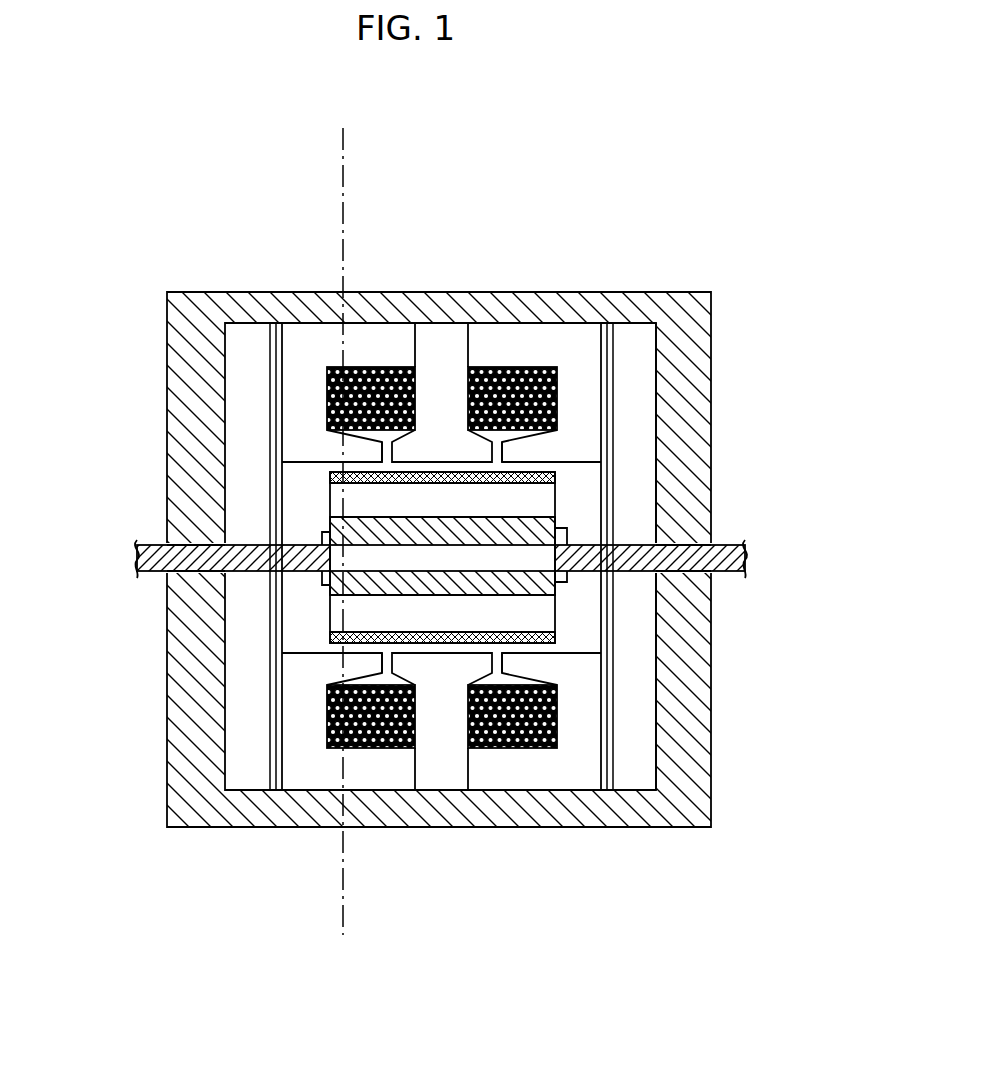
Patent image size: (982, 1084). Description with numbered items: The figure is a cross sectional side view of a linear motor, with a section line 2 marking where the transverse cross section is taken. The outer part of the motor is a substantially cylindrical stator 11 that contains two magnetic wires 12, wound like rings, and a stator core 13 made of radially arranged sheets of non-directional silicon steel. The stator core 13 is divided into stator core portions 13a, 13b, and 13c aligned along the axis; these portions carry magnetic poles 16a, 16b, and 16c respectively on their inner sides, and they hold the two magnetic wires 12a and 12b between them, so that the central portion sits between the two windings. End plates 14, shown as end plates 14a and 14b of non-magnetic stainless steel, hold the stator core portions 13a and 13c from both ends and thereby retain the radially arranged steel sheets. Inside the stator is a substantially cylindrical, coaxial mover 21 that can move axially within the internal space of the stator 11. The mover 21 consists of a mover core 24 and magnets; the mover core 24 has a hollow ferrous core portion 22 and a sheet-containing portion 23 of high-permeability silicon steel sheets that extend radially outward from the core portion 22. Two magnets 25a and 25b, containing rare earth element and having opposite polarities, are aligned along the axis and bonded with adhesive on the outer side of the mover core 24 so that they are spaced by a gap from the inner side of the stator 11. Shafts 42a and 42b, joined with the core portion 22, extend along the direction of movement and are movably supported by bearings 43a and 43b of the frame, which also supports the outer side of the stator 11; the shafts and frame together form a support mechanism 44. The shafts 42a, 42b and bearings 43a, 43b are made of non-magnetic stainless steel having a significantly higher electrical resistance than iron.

The line 2— 2 is at (398, 140).
The stator 11 is at (434, 543).
The magnetic wires 12 is at (435, 554).
The magnetic wire 12a is at (373, 370).
The magnetic wire 12b is at (495, 373).
The stator core 13 is at (434, 491).
The stator core portion 13a is at (300, 337).
The stator core portion 13b is at (432, 343).
The stator core portion 13c is at (583, 335).
The end plates 14 is at (225, 310).
The end plate 14a is at (270, 340).
The end plate 14b is at (607, 340).
The magnetic pole 16a is at (320, 452).
The magnetic pole 16b is at (443, 452).
The magnetic pole 16c is at (570, 452).
The mover 21 is at (367, 613).
The core portion 22 is at (527, 585).
The sheet-containing portion 23 is at (398, 617).
The mover core 24 is at (537, 610).
The magnet 25a is at (348, 460).
The magnet 25b is at (528, 470).
The shaft 42a is at (135, 553).
The shaft 42b is at (748, 552).
The bearing 43a is at (195, 528).
The bearing 43b is at (690, 525).
The support mechanism 44 is at (728, 587).